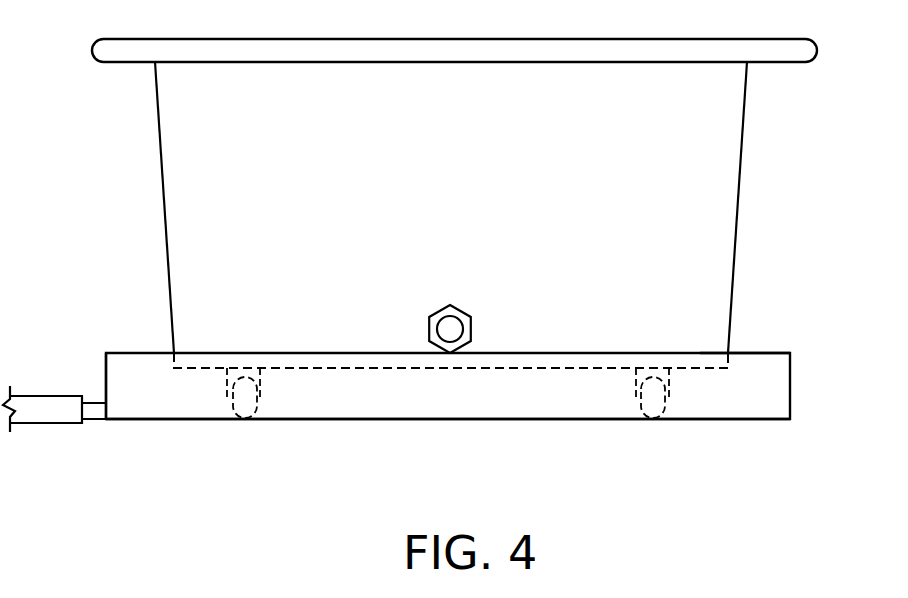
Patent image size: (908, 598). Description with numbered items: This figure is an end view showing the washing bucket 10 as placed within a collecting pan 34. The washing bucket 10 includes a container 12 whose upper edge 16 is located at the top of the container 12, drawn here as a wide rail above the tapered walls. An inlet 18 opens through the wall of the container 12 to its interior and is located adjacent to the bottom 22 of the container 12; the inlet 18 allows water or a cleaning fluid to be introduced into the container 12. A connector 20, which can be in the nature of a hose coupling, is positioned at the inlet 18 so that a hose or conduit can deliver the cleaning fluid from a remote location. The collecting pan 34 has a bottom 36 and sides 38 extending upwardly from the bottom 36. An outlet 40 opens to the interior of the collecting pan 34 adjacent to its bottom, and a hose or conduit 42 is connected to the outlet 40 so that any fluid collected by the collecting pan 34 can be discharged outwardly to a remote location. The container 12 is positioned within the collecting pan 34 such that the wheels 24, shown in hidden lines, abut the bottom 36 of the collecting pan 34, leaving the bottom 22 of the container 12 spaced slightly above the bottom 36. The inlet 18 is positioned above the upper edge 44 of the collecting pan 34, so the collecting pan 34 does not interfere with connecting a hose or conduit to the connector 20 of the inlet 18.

The washing bucket 10 is at (798, 222).
The container 12 is at (722, 131).
The upper edge 16 is at (818, 48).
The inlet 18 is at (445, 318).
The connector 20 is at (468, 316).
The bottom 22 is at (590, 368).
The wheels 24 is at (656, 419).
The collecting pan 34 is at (791, 370).
The bottom 36 is at (546, 420).
The sides 38 is at (125, 357).
The outlet 40 is at (96, 420).
The hose or conduit 42 is at (45, 395).
The upper edge 44 is at (762, 352).